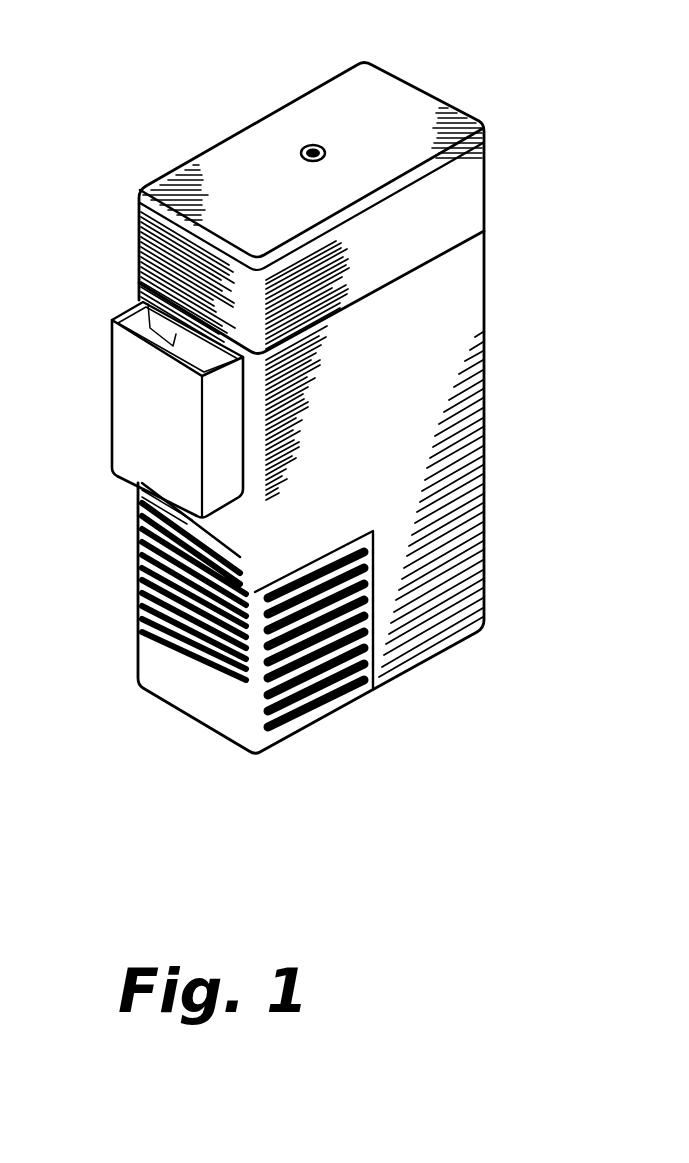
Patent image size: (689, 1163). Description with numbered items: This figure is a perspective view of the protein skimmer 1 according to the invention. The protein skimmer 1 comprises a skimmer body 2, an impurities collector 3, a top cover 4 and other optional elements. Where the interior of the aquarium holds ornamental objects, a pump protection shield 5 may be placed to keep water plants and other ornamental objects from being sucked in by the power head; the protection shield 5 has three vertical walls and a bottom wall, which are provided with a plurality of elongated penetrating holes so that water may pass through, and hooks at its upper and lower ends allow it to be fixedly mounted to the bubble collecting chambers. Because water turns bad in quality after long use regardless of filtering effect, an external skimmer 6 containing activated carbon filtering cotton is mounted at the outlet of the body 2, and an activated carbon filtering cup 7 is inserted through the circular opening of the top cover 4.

The protein skimmer 1 is at (97, 288).
The skimmer body 2 is at (487, 407).
The impurities collector 3 is at (474, 201).
The top cover 4 is at (428, 98).
The pump protection shield 5 is at (180, 692).
The external skimmer 6 is at (125, 393).
The activated carbon filtering cup 7 is at (318, 146).